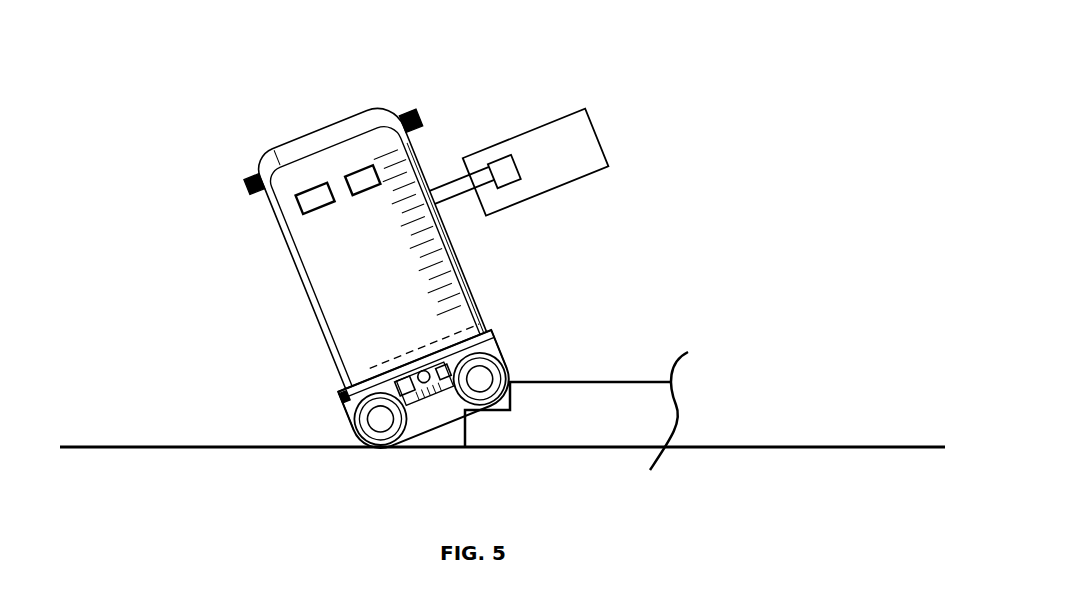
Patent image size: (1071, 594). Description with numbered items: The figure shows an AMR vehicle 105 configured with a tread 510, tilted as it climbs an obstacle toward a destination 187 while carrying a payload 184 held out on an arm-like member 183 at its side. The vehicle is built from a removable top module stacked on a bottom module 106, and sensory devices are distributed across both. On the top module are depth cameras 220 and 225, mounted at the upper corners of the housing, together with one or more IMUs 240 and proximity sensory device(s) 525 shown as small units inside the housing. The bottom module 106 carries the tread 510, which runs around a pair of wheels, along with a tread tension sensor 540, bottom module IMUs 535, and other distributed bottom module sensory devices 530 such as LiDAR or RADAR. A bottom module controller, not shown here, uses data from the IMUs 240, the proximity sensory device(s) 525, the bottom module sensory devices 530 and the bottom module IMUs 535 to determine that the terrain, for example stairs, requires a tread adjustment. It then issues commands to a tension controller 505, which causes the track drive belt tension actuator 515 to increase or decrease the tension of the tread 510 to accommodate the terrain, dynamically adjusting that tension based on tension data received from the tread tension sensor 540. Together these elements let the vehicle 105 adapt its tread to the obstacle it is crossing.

The AMR vehicle 105 is at (257, 161).
The bottom module 106 is at (340, 406).
The arm 183 is at (456, 203).
The payload 184 is at (522, 134).
The destination 187 is at (651, 381).
The depth camera 220 is at (245, 191).
The depth camera 225 is at (416, 108).
The IMU 240 is at (305, 189).
The tension controller 505 is at (395, 381).
The tread 510 is at (413, 442).
The track drive belt tension actuator 515 is at (406, 387).
The proximity sensory device 525 is at (375, 163).
The bottom module sensory device 530 is at (492, 333).
The bottom module IMU 535 is at (343, 398).
The tread tension sensor 540 is at (448, 365).